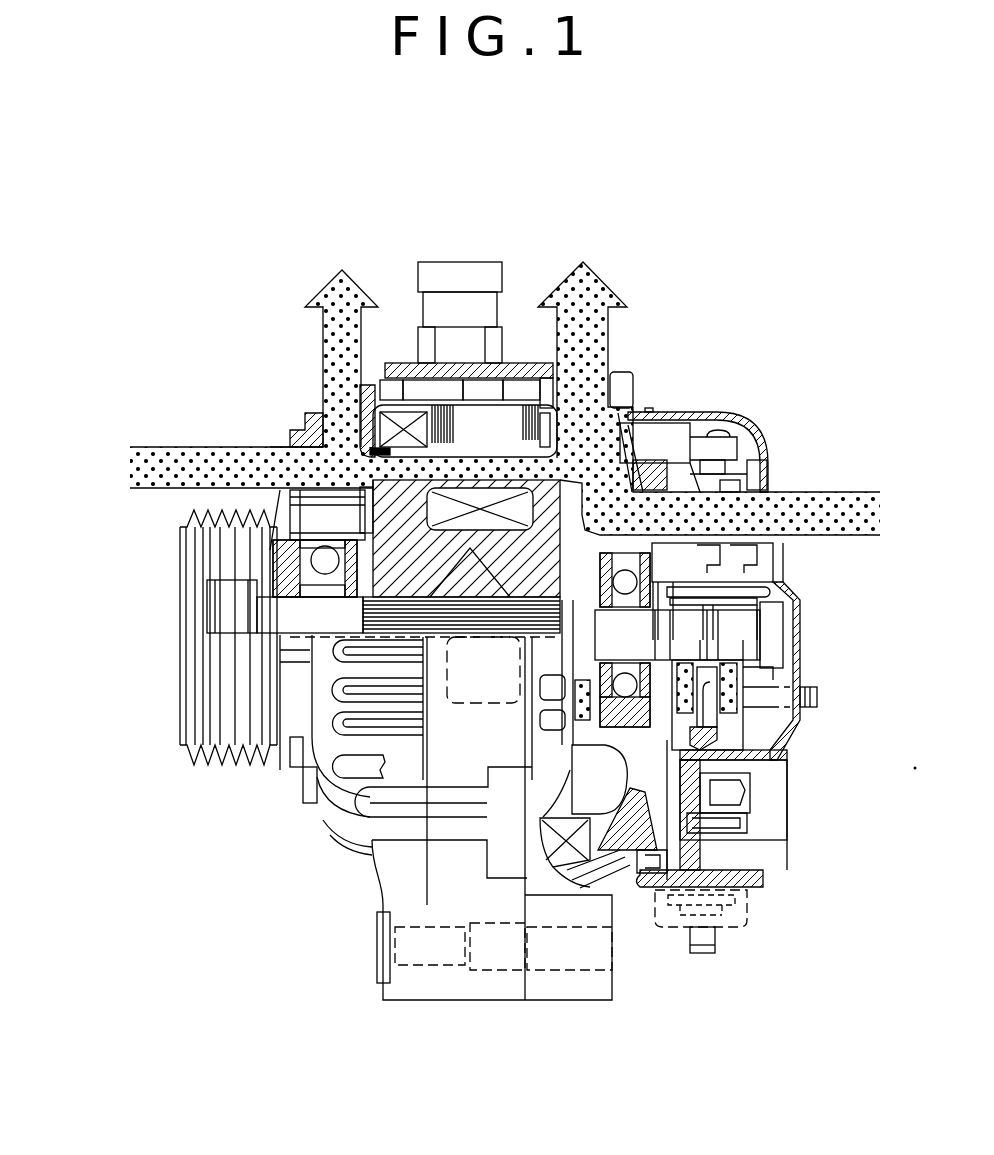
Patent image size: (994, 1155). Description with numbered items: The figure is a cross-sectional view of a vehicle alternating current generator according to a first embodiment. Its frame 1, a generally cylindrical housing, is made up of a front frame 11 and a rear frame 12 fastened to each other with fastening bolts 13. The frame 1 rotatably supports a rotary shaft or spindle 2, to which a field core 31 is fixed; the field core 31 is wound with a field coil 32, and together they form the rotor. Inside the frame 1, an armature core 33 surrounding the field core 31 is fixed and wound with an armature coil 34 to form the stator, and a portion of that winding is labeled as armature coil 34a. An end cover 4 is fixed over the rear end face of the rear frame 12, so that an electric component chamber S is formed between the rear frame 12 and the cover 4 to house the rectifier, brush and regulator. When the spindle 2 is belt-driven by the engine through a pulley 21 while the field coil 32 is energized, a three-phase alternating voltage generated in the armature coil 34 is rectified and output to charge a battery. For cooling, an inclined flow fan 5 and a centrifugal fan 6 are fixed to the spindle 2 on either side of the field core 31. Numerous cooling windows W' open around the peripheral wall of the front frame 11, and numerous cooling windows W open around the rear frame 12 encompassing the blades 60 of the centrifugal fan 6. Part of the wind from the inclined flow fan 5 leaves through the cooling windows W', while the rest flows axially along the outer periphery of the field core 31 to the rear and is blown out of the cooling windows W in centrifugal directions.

The frame 1 is at (518, 1004).
The front frame 11 is at (448, 985).
The rear frame 12 is at (556, 987).
The fastening bolts 13 is at (622, 400).
The rotary shaft or spindle 2 is at (277, 620).
The pulley 21 is at (200, 707).
The field core 31 is at (400, 425).
The field coil 32 is at (380, 465).
The armature core 33 is at (483, 423).
The armature coil 34 is at (405, 415).
The outlet passage 34a is at (548, 443).
The end cover 4 is at (752, 440).
The inclined flow fan 5 is at (300, 462).
The centrifugal fan 6 is at (655, 540).
The blades 60 is at (600, 778).
The electric component chamber S is at (770, 725).
The cooling windows W is at (505, 398).
The cooling windows W' is at (265, 378).